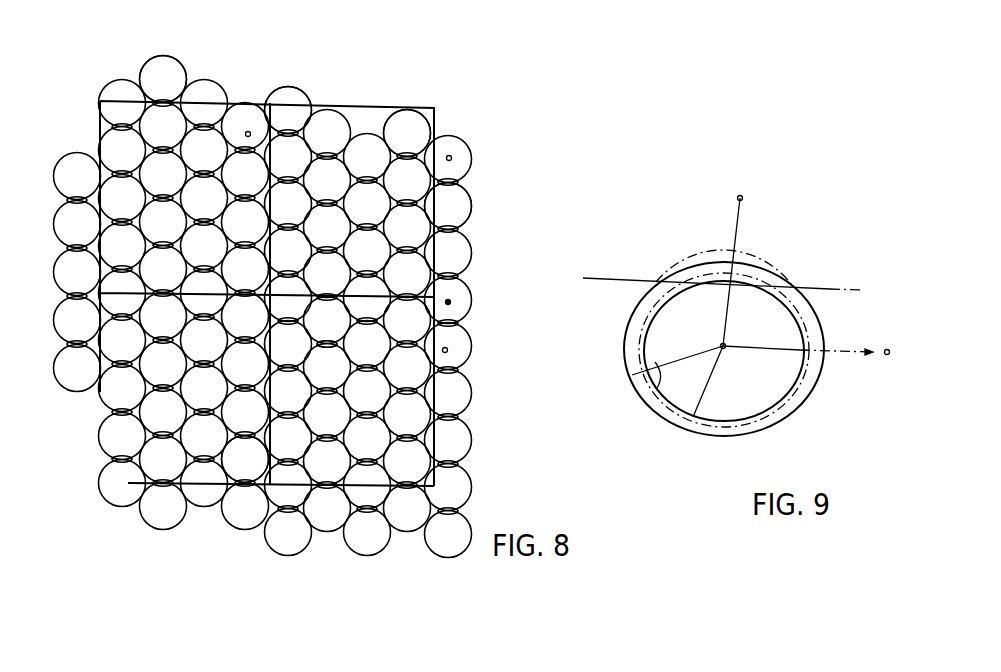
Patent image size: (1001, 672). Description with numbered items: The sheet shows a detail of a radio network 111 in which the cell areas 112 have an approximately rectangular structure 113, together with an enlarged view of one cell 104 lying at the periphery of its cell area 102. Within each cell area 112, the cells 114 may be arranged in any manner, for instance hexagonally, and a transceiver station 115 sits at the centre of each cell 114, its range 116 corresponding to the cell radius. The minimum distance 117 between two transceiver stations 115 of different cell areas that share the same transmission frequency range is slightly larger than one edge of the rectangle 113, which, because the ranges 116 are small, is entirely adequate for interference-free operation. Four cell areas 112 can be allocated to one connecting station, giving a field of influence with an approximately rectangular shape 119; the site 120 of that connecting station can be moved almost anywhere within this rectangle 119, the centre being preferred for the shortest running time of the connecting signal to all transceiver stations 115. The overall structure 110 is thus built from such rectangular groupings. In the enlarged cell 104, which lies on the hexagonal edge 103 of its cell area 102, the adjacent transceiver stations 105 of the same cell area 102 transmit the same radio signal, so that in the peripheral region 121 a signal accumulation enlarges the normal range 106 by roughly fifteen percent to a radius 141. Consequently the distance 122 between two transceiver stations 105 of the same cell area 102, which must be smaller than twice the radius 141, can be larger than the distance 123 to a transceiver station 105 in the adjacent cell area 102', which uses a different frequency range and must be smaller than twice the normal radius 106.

In FIG. 8, the knitted structure 110 is at (413, 350).
In FIG. 8, the radio network 111 is at (112, 72).
In FIG. 8, the cell areas 112 is at (323, 104).
In FIG. 8, the rectangular structure 113 is at (255, 447).
In FIG. 8, the cells 114 is at (500, 236).
In FIG. 8, the transceiver stations 115 is at (262, 134).
In FIG. 8, the range 116 is at (445, 372).
In FIG. 8, the minimum distance 117 is at (373, 132).
In FIG. 8, the rectangular shape 119 is at (173, 98).
In FIG. 8, the site of the connecting station 120 is at (337, 341).
In FIG. 9, the cell area 102 is at (709, 373).
In FIG. 9, the adjacent cell area 102' is at (699, 245).
In FIG. 9, the hexagonal edge 103 is at (830, 287).
In FIG. 9, the cell 104 is at (824, 370).
In FIG. 9, the transceiver stations 105 is at (742, 200).
In FIG. 9, the range 106 is at (705, 400).
In FIG. 9, the peripheral region 121 is at (800, 397).
In FIG. 9, the distance between transceiver stations within the same cell area 122 is at (848, 345).
In FIG. 9, the distance between transceiver stations of different cell areas 123 is at (743, 237).
In FIG. 9, the enlarged radius 141 is at (668, 390).